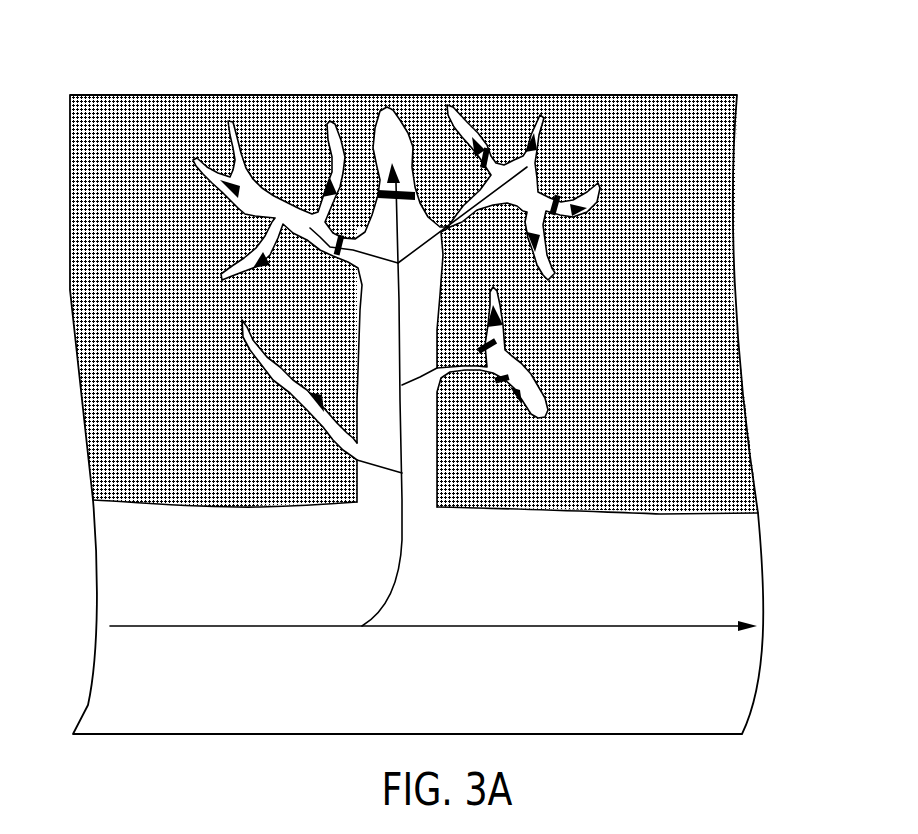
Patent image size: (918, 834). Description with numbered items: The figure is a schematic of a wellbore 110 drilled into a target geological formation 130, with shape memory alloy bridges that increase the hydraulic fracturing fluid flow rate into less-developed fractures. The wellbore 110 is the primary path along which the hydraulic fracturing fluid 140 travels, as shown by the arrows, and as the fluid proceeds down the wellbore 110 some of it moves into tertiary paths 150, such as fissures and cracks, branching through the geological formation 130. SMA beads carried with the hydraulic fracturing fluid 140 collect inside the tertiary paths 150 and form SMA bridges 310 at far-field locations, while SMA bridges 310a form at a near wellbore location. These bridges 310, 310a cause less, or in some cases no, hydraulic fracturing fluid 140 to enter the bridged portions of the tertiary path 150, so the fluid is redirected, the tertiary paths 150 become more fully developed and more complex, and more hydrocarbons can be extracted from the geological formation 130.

The wellbore 110 is at (97, 605).
The target geological formation 130 is at (720, 150).
The hydraulic fracturing fluid 140 is at (401, 565).
The tertiary paths 150 is at (397, 130).
The SMA bridges 310 is at (339, 246).
The SMA bridges at near wellbore location 310a is at (405, 192).